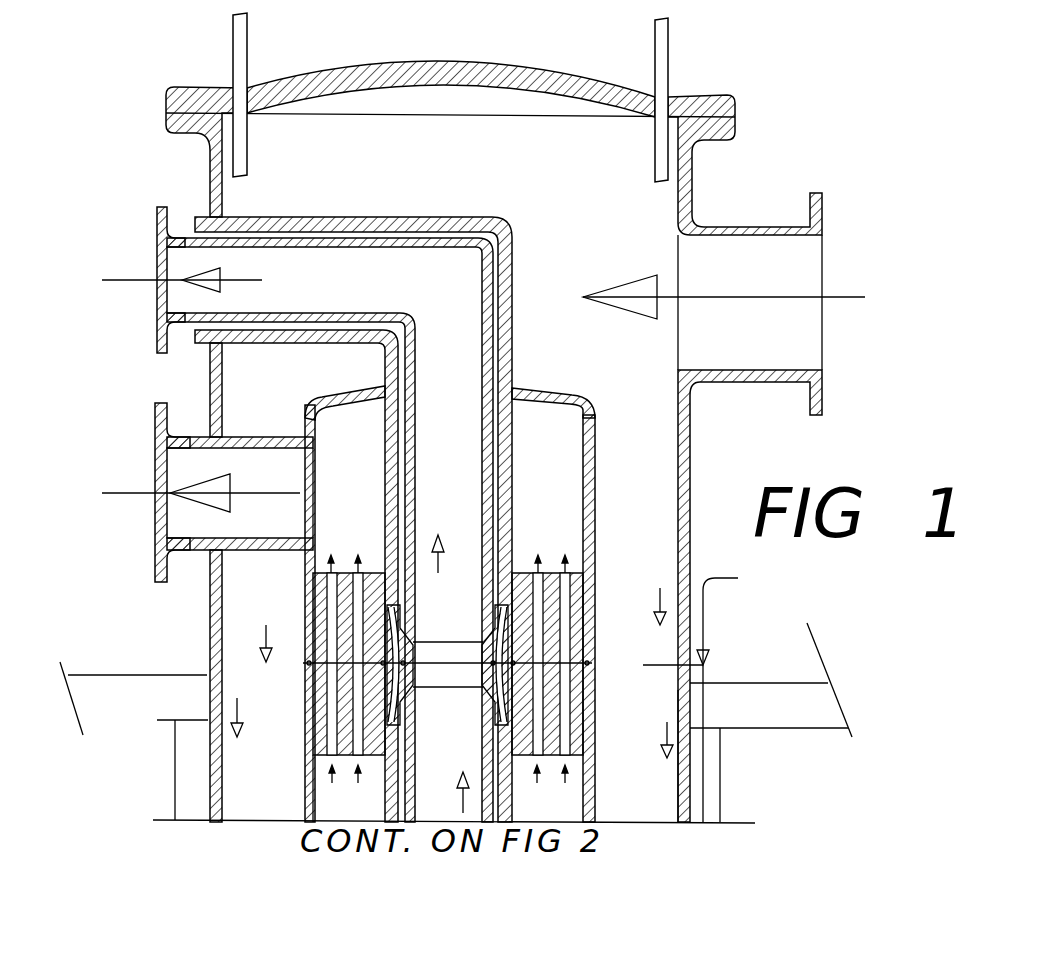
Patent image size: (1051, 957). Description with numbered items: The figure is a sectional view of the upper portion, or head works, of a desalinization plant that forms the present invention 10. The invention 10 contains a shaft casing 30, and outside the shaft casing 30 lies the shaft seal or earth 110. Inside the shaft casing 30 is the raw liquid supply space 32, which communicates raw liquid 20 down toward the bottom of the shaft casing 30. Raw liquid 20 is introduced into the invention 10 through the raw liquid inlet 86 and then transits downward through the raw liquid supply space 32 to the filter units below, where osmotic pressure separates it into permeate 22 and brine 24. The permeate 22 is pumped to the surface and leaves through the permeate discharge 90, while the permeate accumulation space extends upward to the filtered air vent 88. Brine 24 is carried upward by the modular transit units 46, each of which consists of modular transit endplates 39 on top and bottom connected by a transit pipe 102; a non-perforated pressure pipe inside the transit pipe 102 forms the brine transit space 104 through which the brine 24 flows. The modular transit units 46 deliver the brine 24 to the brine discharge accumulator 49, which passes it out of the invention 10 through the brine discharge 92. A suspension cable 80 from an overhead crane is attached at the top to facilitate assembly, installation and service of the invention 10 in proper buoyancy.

The present invention 10 is at (822, 455).
The raw liquid 20 is at (748, 296).
The permeate 22 is at (158, 276).
The brine 24 is at (177, 492).
The shaft casing 30 is at (683, 808).
The raw liquid supply space 32 is at (663, 780).
The modular transit endplates 39 is at (303, 695).
The modular transit units 46 is at (741, 687).
The brine discharge accumulator 49 is at (300, 415).
The suspension cable 80 is at (670, 62).
The raw liquid inlet 86 is at (823, 253).
The filtered air vent 88 is at (283, 478).
The permeate discharge 90 is at (157, 257).
The brine discharge 92 is at (155, 460).
The transit pipe 102 is at (303, 765).
The brine transit space 104 is at (347, 800).
The shaft seal or earth 110 is at (188, 738).